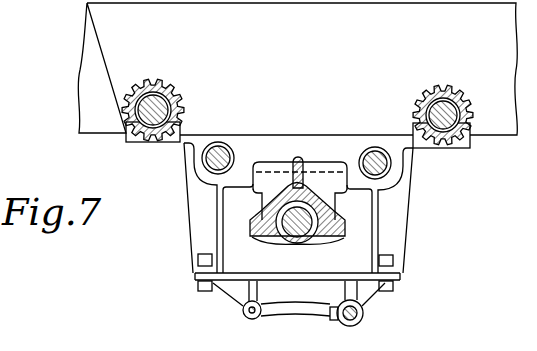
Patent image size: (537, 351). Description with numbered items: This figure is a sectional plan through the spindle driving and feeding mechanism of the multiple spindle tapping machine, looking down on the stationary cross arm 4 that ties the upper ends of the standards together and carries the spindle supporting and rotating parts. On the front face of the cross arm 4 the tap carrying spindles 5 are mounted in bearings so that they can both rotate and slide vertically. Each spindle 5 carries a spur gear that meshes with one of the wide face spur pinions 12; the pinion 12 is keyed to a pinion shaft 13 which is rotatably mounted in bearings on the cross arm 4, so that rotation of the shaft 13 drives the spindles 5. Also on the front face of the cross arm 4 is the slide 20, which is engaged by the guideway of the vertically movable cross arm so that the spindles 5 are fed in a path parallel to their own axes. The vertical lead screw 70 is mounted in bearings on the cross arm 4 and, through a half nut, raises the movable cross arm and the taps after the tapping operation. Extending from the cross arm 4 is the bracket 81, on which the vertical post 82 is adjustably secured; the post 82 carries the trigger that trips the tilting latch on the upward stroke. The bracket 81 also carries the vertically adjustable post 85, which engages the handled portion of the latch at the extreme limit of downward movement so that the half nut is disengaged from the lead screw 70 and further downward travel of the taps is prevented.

The cross arm 4 is at (297, 69).
The spur pinion 12 is at (183, 91).
The pinion shaft 13 is at (182, 111).
The spindle 5 is at (207, 159).
The slide 20 is at (254, 238).
The lead screw 70 is at (291, 226).
The bracket 81 is at (299, 300).
The vertical post 82 is at (364, 314).
The vertical post 85 is at (247, 313).